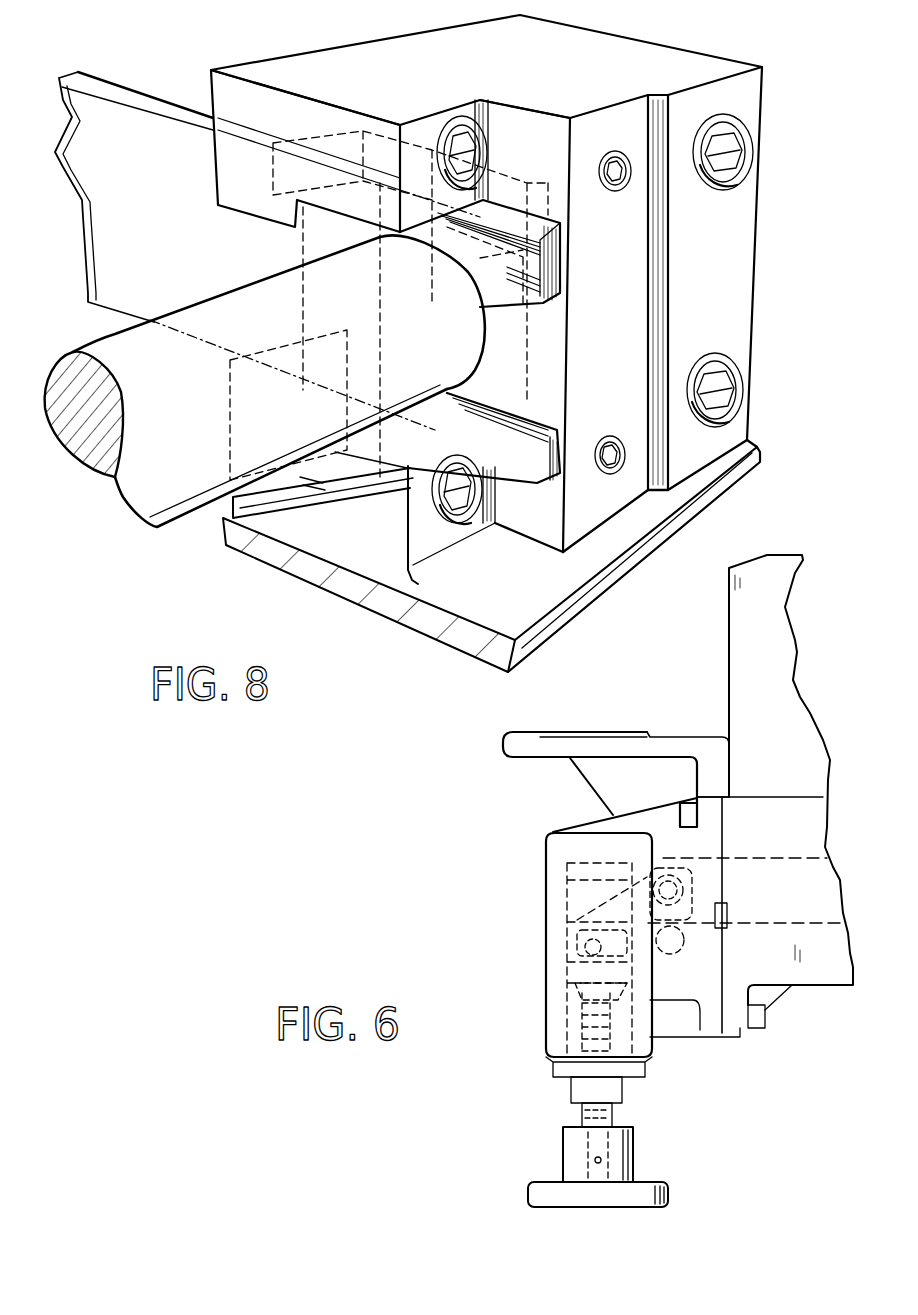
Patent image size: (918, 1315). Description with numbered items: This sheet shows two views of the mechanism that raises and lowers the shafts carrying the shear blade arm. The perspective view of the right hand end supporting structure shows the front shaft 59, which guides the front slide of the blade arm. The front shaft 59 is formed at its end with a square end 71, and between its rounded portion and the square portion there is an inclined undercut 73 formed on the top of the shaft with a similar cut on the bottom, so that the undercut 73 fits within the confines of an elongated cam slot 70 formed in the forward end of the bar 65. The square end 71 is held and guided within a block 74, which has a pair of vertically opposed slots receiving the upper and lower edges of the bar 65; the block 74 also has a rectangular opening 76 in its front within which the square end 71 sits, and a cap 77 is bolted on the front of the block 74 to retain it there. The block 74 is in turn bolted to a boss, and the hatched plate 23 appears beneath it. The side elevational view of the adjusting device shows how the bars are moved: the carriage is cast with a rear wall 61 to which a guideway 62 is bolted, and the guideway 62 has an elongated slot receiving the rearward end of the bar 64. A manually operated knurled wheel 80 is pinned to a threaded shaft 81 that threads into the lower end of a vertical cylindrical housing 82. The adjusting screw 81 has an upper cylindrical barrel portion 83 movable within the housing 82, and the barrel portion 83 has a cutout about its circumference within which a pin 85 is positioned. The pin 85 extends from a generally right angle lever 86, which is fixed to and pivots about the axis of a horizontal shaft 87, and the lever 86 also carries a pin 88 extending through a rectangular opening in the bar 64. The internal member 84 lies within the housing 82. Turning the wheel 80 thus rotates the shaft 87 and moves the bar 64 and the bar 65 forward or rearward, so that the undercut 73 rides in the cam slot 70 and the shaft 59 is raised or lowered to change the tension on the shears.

In FIG. 8, the block 74 is at (268, 65).
In FIG. 8, the bar 65 is at (135, 115).
In FIG. 8, the cap 77 is at (562, 95).
In FIG. 8, the inclined undercut 73 is at (537, 228).
In FIG. 8, the square end 71 is at (510, 333).
In FIG. 8, the cam slot 70 is at (535, 348).
In FIG. 8, the rectangular opening 76 is at (513, 381).
In FIG. 8, the front shaft 59 is at (148, 497).
In FIG. 8, the base plate 23 is at (327, 575).
In FIG. 6, the pin 88 is at (687, 880).
In FIG. 6, the bar 64 is at (815, 870).
In FIG. 6, the right angle lever 86 is at (690, 913).
In FIG. 6, the cylindrical barrel portion 83 is at (570, 910).
In FIG. 6, the pin 85 is at (570, 952).
In FIG. 6, the plunger 84 is at (558, 970).
In FIG. 6, the vertical cylindrical housing 82 is at (553, 1015).
In FIG. 6, the horizontal shaft 87 is at (664, 952).
In FIG. 6, the guideway 62 is at (712, 1017).
In FIG. 6, the rear wall 61 is at (737, 1017).
In FIG. 6, the threaded shaft 81 is at (580, 1112).
In FIG. 6, the knurled wheel 80 is at (627, 1197).